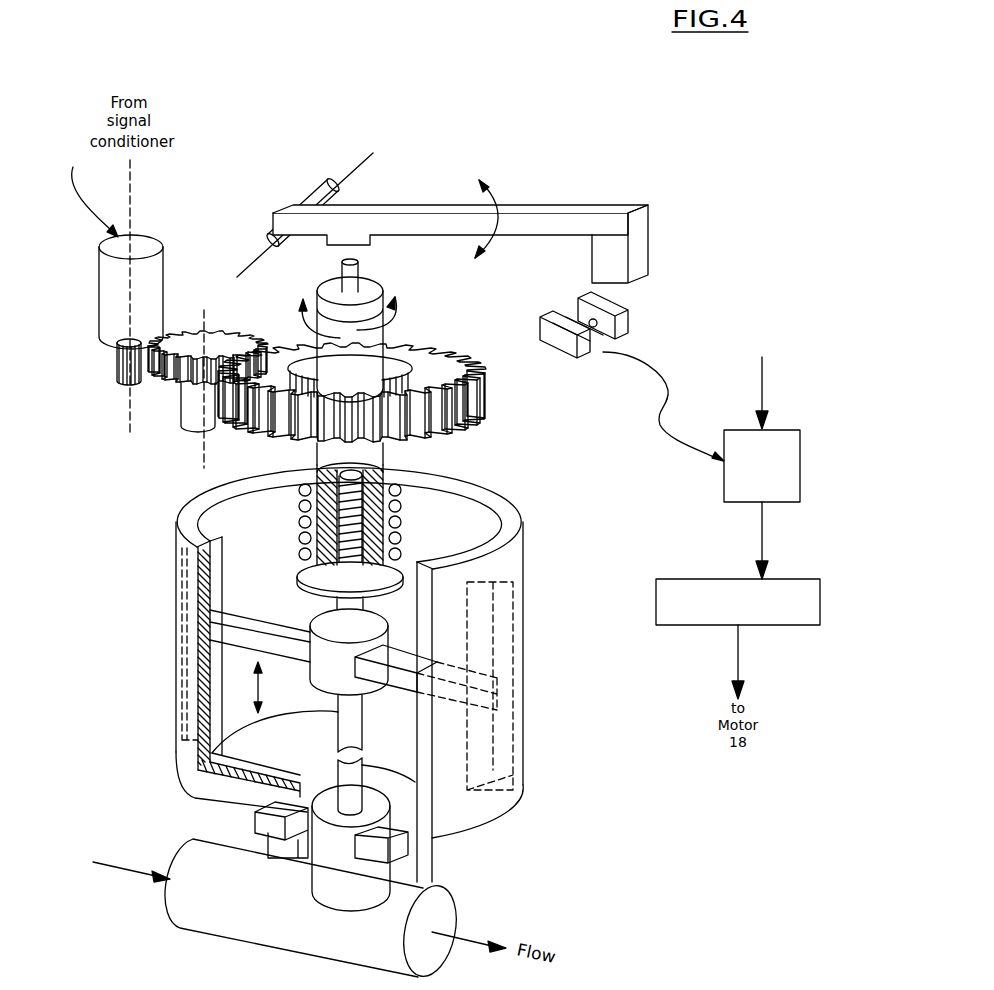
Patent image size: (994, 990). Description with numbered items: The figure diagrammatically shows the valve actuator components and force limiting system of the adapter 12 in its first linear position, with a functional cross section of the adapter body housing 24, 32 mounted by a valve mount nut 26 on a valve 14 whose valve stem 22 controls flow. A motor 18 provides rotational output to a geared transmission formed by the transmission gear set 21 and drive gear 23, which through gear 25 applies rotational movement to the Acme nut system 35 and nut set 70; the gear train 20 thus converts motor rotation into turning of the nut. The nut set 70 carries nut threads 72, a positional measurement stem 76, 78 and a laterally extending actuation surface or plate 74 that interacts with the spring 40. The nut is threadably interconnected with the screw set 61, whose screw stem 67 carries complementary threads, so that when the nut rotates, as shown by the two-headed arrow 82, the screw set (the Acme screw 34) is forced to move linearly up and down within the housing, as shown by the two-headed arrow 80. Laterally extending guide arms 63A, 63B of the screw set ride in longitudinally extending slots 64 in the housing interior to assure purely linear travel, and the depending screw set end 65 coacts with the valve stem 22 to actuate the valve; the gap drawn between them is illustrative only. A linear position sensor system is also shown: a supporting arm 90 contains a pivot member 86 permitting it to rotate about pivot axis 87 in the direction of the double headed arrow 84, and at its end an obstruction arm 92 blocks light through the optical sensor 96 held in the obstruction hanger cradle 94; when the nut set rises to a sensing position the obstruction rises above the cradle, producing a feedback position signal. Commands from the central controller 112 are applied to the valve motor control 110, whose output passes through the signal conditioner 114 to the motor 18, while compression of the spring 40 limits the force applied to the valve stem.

The adapter 12 is at (645, 514).
The valve 14 is at (314, 910).
The motor 18 is at (131, 292).
The gear train 20 is at (170, 396).
The transmission gear set 21 is at (188, 337).
The valve stem 22 is at (365, 784).
The drive gear 23 is at (230, 427).
The adapter bottom housing 24 is at (392, 675).
The gear 25 is at (400, 360).
The valve mount nut 26 is at (395, 858).
The adapter top housing 32 is at (525, 708).
The Acme screw 34 is at (397, 630).
The Acme nut system 35 is at (395, 446).
The spring 40 is at (365, 505).
The screw set 61 is at (396, 452).
The guide arm 63A is at (403, 693).
The guide arm 63B is at (223, 648).
The slots 64 is at (507, 637).
The screw set end 65 is at (337, 716).
The screw stem 67 is at (317, 612).
The nut set 70 is at (385, 513).
The nut threads 72 is at (320, 470).
The actuation surface 74 is at (402, 521).
The positional measurement stem 76 is at (313, 336).
The positional measurement stem 78 is at (358, 275).
The two-headed arrow 80 is at (247, 690).
The two-headed arrow 82 is at (383, 326).
The double headed arrow 84 is at (496, 196).
The pivot member 86 is at (326, 186).
The pivot axis 87 is at (362, 163).
The supporting arm 90 is at (374, 203).
The obstruction arm 92 is at (652, 258).
The obstruction hanger cradle 94 is at (617, 311).
The optical sensor 96 is at (603, 340).
The valve motor control 110 is at (762, 504).
The central controller 112 is at (772, 349).
The signal conditioner 114 is at (738, 639).